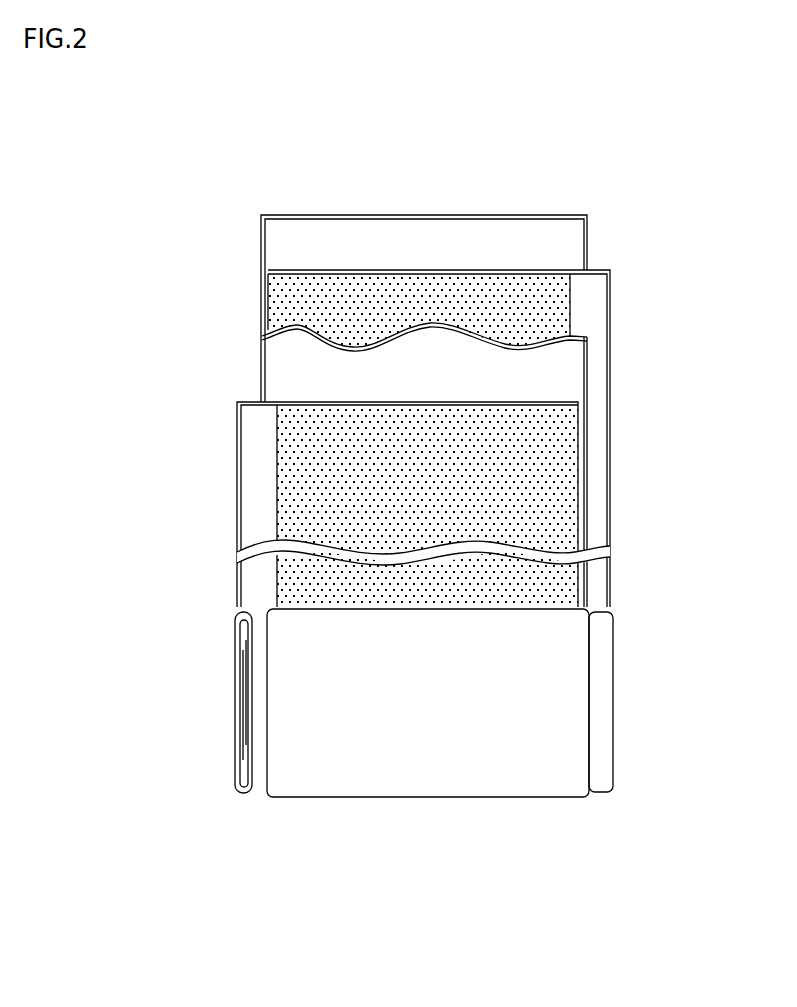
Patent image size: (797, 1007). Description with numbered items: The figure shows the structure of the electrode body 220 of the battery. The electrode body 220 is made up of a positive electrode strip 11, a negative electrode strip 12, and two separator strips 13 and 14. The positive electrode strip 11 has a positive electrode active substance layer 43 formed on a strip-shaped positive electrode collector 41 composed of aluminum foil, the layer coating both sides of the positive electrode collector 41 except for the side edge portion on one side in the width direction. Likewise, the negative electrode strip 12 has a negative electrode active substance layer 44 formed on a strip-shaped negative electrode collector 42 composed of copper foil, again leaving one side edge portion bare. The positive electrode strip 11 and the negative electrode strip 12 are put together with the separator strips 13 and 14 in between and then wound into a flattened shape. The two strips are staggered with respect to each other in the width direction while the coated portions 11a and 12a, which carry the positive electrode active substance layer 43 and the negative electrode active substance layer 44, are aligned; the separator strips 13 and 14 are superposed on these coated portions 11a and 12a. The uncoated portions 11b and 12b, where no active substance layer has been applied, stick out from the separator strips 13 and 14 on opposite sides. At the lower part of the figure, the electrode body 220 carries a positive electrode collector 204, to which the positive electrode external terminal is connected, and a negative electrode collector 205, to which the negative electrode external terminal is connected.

The positive electrode strip 11 is at (236, 453).
The coated portion 11a is at (328, 497).
The uncoated portion 11b is at (254, 516).
The negative electrode strip 12 is at (616, 280).
The coated portion 12a is at (514, 286).
The uncoated portion 12b is at (590, 322).
The separator strip 13 is at (278, 375).
The separator strip 14 is at (277, 243).
The positive electrode collector 41 is at (262, 427).
The negative electrode collector 42 is at (603, 373).
The positive electrode active substance layer 43 is at (563, 463).
The negative electrode active substance layer 44 is at (283, 305).
The positive electrode collector 204 is at (260, 700).
The negative electrode collector 205 is at (603, 700).
The electrode body 220 is at (457, 782).